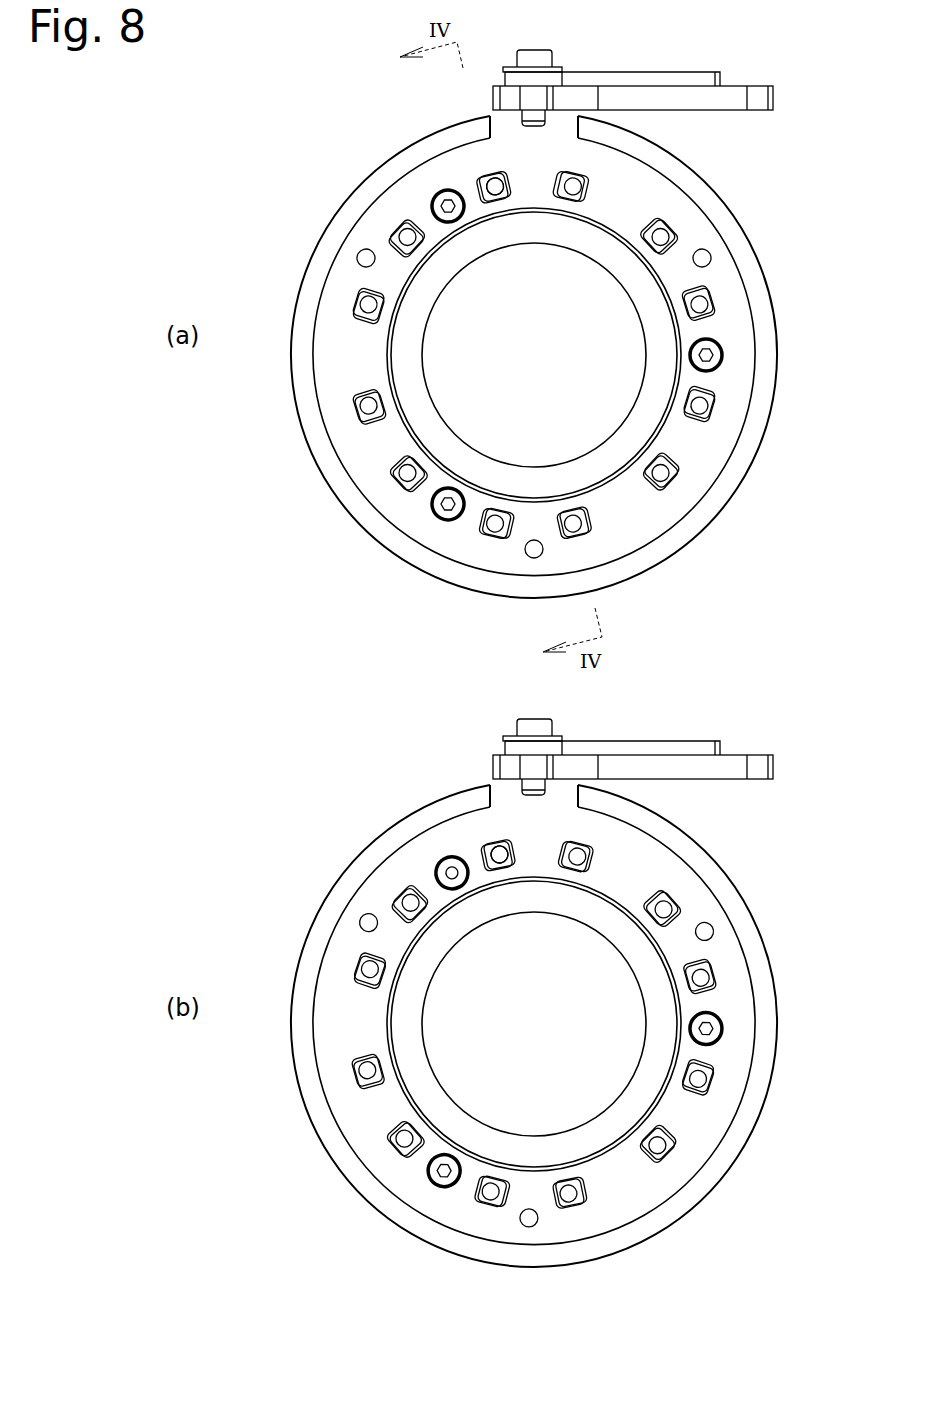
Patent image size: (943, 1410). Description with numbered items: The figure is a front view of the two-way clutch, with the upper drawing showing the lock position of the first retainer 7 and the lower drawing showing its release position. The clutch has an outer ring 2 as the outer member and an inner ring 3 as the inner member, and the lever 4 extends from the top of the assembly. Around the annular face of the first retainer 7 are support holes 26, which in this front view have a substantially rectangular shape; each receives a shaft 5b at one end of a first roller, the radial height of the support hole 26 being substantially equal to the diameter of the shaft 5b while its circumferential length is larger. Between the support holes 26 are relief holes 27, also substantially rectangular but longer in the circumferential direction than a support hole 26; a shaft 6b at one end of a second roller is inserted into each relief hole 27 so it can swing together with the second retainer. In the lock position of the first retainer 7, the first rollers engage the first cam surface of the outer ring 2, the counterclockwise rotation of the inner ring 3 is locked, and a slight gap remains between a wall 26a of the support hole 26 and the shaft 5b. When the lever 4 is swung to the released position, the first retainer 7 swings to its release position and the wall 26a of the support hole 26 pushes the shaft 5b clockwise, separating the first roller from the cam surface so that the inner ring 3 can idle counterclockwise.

The outer ring 2 is at (743, 254).
The inner ring 3 is at (542, 229).
The lever 4 is at (650, 87).
The shaft 5b is at (470, 182).
The shaft 6b is at (590, 187).
The first retainer 7 is at (735, 376).
The support hole 26 is at (492, 172).
The wall 26a is at (478, 187).
The relief hole 27 is at (562, 168).